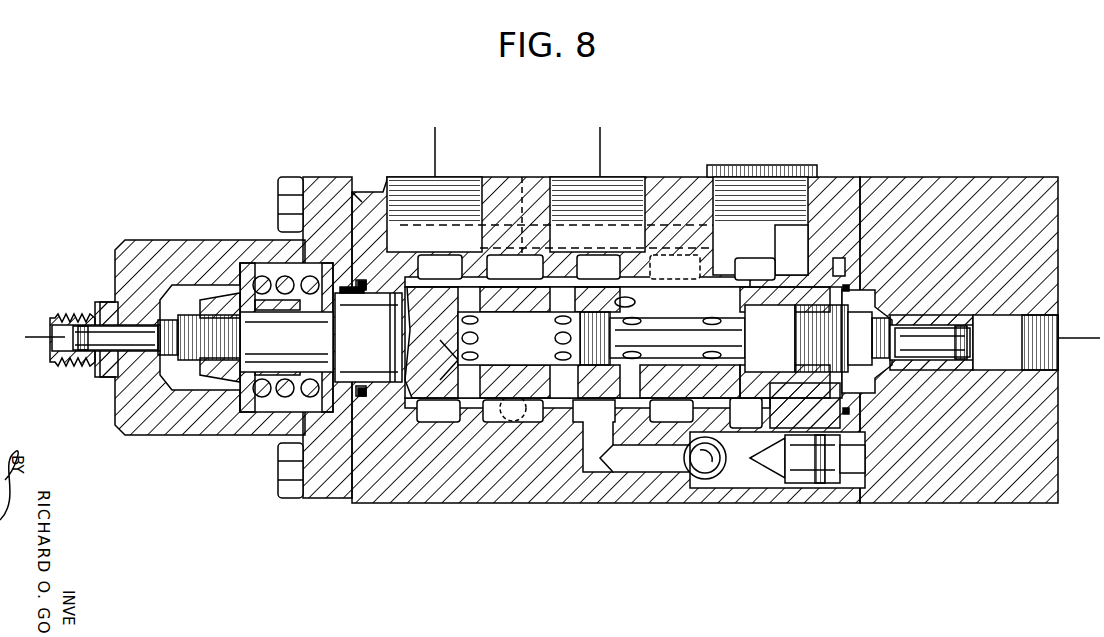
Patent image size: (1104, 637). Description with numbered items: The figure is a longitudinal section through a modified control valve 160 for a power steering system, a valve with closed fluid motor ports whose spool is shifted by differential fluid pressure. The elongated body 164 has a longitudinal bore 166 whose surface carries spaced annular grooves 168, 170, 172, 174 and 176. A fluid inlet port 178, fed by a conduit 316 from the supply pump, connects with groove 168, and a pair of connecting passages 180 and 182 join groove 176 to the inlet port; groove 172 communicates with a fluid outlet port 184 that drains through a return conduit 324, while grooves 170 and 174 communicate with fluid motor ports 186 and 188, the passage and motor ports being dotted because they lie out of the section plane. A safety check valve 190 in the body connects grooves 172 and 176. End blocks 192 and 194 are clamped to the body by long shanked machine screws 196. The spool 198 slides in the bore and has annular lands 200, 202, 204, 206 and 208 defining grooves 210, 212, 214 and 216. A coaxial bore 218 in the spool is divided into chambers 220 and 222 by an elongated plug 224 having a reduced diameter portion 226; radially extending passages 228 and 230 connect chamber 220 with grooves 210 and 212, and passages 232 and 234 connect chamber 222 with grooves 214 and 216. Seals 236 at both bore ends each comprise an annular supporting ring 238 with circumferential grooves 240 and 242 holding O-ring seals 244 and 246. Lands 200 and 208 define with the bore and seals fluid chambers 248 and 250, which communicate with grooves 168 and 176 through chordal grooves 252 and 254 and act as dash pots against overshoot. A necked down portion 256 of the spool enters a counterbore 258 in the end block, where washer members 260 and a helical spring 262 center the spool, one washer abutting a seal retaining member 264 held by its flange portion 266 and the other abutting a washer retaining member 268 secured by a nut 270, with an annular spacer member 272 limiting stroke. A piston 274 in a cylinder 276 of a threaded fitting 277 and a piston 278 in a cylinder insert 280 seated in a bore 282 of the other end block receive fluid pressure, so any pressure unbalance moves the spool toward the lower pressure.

The valve 160 is at (638, 519).
The body 164 is at (408, 485).
The bore 166 is at (394, 375).
The annular groove 168 is at (425, 416).
The annular groove 170 is at (525, 418).
The annular groove 172 is at (577, 416).
The annular groove 174 is at (652, 416).
The annular groove 176 is at (745, 418).
The fluid inlet port 178 is at (395, 178).
The connecting passage 180 is at (522, 176).
The connecting passage 182 is at (722, 236).
The fluid outlet port 184 is at (640, 178).
The fluid motor port 186 is at (516, 372).
The fluid motor port 188 is at (680, 222).
The safety check valve 190 is at (712, 480).
The end block 192 is at (328, 498).
The end block 194 is at (898, 488).
The machine screw 196 is at (285, 180).
The spool 198 is at (358, 342).
The annular land 200 is at (398, 406).
The annular land 202 is at (480, 416).
The annular land 204 is at (633, 416).
The annular land 206 is at (718, 438).
The annular land 208 is at (790, 405).
The groove 210 is at (450, 368).
The groove 212 is at (578, 372).
The groove 214 is at (652, 372).
The groove 216 is at (742, 372).
The bore 218 is at (640, 305).
The chamber 220 is at (500, 335).
The chamber 222 is at (674, 361).
The elongated plug 224 is at (760, 344).
The reduced diameter portion 226 is at (663, 344).
The radially extending passage 228 is at (458, 300).
The radially extending passage 230 is at (550, 300).
The radially extending passage 232 is at (620, 300).
The passage 234 is at (745, 302).
The seal 236 is at (860, 400).
The annular supporting ring 238 is at (1075, 337).
The circumferential groove 240 is at (360, 292).
The circumferential groove 242 is at (360, 284).
The O-ring seal 244 is at (360, 385).
The O-ring seal 246 is at (345, 425).
The fluid chamber 248 is at (390, 300).
The fluid chamber 250 is at (838, 257).
The chordal groove 252 is at (422, 268).
The chordal groove 254 is at (788, 258).
The necked down portion 256 is at (256, 342).
The counterbore 258 is at (275, 262).
The washer member 260 is at (322, 300).
The helical spring 262 is at (262, 425).
The seal retaining member 264 is at (286, 354).
The flange portion 266 is at (322, 412).
The washer retaining member 268 is at (225, 300).
The nut 270 is at (222, 372).
The annular spacer member 272 is at (245, 262).
The piston 274 is at (145, 338).
The cylinder 276 is at (52, 340).
The fitting 277 is at (105, 302).
The piston 278 is at (908, 344).
The cylinder insert 280 is at (940, 360).
The bore 282 is at (1001, 320).
The conduit 316 is at (435, 135).
The return conduit 324 is at (600, 135).